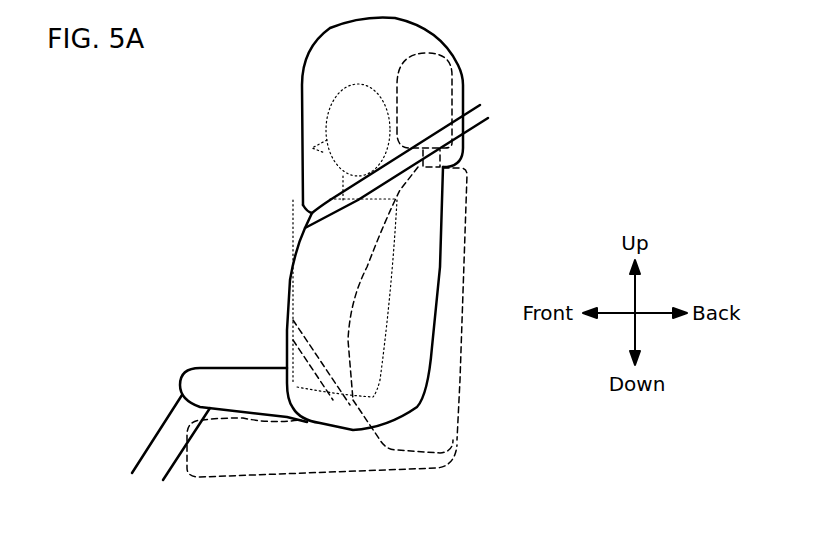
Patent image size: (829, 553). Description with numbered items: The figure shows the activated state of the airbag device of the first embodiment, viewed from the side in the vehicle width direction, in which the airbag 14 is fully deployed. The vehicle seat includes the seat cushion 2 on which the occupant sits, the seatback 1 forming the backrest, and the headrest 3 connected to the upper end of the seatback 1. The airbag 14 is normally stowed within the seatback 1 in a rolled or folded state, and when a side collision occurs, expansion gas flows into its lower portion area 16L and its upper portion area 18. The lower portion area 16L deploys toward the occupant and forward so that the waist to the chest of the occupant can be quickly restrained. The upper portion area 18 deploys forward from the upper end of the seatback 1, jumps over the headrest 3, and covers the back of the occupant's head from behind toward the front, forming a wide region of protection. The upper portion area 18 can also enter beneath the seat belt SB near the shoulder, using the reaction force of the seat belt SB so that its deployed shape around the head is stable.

The seatback 1 is at (467, 240).
The seat cushion 2 is at (273, 473).
The headrest 3 is at (467, 72).
The airbag 14 is at (300, 180).
The lower portion area 16L is at (288, 323).
The upper portion area 18 is at (427, 33).
The seat belt SB is at (473, 127).